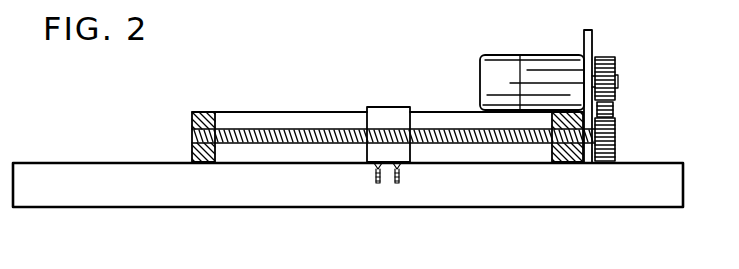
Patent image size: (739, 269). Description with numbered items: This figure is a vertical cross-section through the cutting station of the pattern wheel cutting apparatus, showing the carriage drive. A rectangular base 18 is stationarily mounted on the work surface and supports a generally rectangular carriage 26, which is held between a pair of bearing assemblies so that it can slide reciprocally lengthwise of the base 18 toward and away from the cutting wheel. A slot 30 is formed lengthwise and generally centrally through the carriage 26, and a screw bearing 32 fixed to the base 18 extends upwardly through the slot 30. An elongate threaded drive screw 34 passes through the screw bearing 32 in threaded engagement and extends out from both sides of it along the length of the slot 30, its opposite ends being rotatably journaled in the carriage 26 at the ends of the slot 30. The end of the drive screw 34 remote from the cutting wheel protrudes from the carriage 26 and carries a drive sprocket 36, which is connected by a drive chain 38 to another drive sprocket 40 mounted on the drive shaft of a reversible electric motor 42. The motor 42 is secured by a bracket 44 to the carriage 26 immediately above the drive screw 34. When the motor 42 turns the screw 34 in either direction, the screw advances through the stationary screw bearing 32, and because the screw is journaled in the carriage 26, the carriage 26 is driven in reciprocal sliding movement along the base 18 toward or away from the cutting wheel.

The base 18 is at (533, 190).
The carriage 26 is at (190, 118).
The slot 30 is at (274, 118).
The screw bearing 32 is at (383, 113).
The drive screw 34 is at (452, 122).
The drive sprocket 36 is at (618, 140).
The drive chain 38 is at (618, 108).
The drive sprocket 40 is at (618, 68).
The reversible electric motor 42 is at (503, 73).
The bracket 44 is at (583, 34).